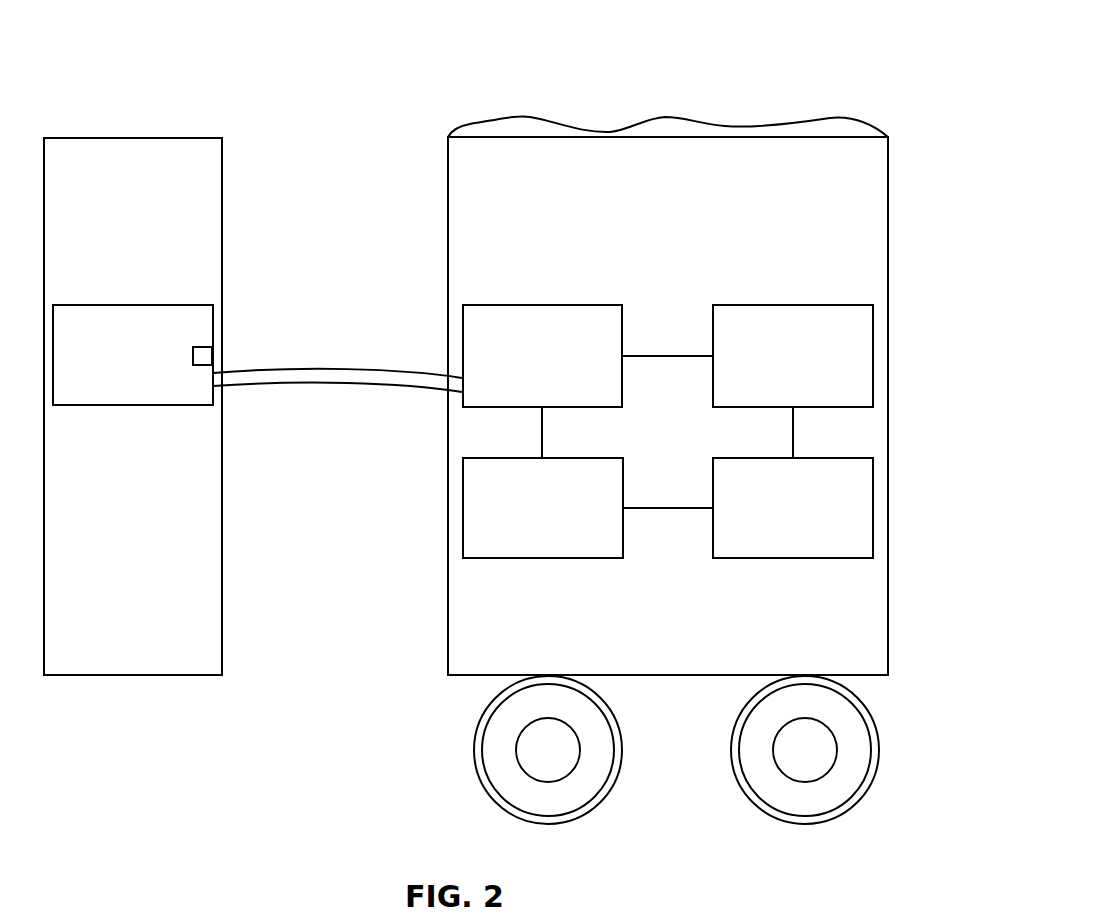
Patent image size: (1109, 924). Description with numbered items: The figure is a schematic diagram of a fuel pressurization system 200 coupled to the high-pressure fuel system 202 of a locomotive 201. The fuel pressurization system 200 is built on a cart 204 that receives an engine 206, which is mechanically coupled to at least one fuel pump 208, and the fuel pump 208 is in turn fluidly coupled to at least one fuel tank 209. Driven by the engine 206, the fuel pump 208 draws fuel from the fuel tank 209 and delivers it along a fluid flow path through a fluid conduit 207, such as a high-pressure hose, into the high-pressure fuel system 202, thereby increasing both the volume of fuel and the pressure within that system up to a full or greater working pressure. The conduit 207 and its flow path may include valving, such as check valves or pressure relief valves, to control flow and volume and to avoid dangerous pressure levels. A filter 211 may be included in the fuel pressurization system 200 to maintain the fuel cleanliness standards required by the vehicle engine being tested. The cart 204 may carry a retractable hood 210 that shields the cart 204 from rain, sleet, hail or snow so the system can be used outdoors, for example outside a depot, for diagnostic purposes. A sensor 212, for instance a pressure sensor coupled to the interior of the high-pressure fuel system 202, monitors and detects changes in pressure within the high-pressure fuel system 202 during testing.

The fuel pressurization system 200 is at (872, 32).
The locomotive 201 is at (197, 137).
The high-pressure fuel system 202 is at (133, 305).
The cart 204 is at (888, 545).
The engine 206 is at (623, 548).
The fluid conduit 207 is at (318, 368).
The fuel pump 208 is at (592, 407).
The fuel tank 209 is at (812, 458).
The retractable hood 210 is at (828, 117).
The filter 211 is at (792, 305).
The sensor 212 is at (203, 345).